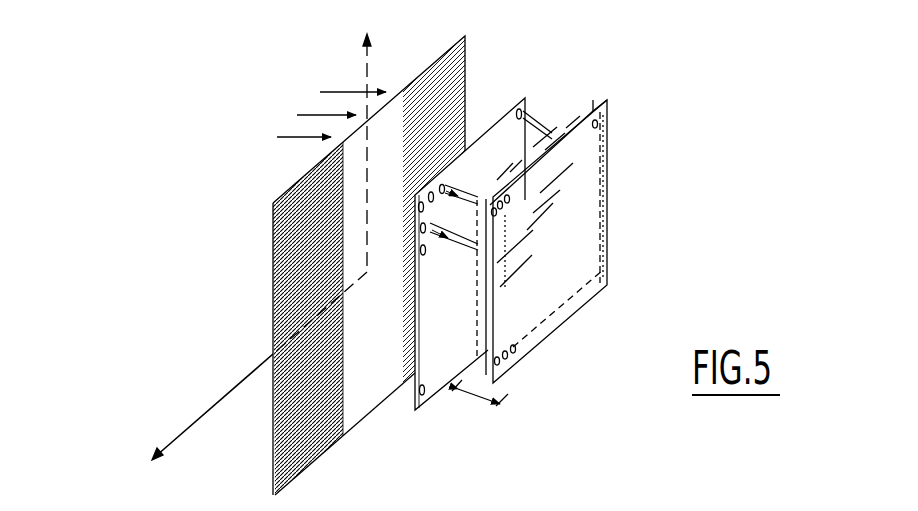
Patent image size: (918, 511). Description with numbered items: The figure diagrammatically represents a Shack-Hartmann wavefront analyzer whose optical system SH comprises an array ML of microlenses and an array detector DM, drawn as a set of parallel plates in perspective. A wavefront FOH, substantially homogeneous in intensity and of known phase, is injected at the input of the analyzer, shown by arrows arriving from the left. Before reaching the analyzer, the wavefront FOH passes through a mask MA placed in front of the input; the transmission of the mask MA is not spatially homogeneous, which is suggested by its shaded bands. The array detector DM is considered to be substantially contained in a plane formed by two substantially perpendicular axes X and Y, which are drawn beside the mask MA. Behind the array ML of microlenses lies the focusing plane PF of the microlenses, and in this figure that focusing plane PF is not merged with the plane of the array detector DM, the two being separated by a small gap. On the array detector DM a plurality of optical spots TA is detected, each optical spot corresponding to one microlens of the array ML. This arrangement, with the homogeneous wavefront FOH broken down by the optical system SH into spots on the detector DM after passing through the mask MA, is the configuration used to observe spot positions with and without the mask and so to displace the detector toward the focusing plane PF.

The mask MA is at (273, 292).
The wavefront FOH is at (297, 116).
The array of microlenses ML is at (533, 106).
The focusing plane PF is at (578, 103).
The array detector DM is at (612, 107).
The optical spots TA is at (603, 130).
The optical system SH is at (440, 409).
The axis X is at (378, 152).
The axis Y is at (258, 366).